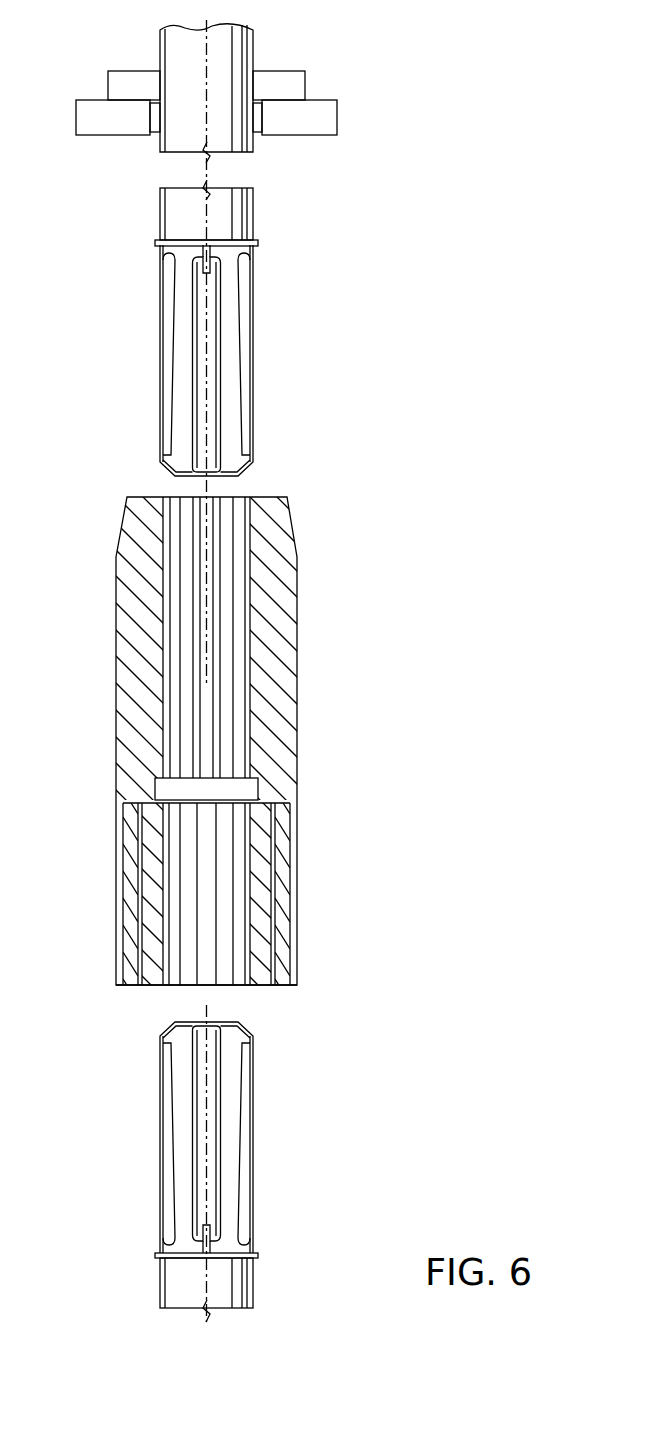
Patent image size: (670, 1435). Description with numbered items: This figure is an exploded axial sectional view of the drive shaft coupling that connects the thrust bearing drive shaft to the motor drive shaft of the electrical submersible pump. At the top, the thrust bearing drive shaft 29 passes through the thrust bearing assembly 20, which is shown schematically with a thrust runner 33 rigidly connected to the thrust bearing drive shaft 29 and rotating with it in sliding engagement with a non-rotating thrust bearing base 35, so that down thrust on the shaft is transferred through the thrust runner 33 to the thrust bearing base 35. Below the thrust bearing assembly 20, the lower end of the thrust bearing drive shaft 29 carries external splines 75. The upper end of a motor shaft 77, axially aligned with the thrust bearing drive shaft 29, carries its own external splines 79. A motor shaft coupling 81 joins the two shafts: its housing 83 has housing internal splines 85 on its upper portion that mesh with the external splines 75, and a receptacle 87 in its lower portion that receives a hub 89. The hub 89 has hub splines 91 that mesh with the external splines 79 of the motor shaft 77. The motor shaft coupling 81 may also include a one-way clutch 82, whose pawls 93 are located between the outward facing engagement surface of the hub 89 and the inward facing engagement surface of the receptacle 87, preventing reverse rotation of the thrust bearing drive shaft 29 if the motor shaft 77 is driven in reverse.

The thrust bearing assembly 20 is at (128, 45).
The thrust runner 33 is at (300, 87).
The thrust bearing base 35 is at (332, 117).
The thrust bearing drive shaft 29 is at (177, 213).
The external splines 75 is at (247, 308).
The motor shaft coupling 81 is at (113, 775).
The housing 83 is at (125, 640).
The housing internal splines 85 is at (185, 572).
The receptacle 87 is at (268, 822).
The one-way clutch 82 is at (282, 878).
The pawls 93 is at (283, 922).
The hub 89 is at (152, 983).
The hub splines 91 is at (247, 976).
The external splines 79 is at (247, 1117).
The motor shaft 77 is at (175, 1283).